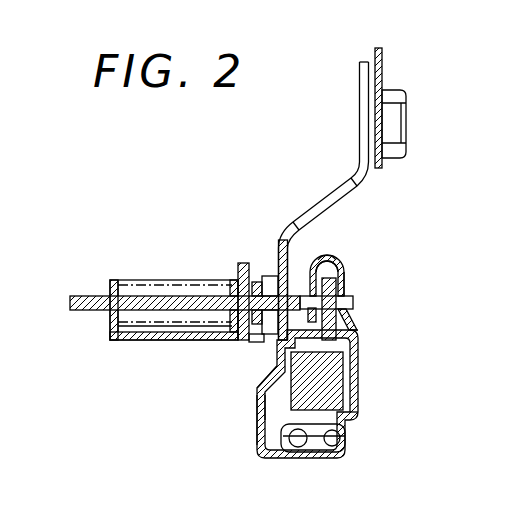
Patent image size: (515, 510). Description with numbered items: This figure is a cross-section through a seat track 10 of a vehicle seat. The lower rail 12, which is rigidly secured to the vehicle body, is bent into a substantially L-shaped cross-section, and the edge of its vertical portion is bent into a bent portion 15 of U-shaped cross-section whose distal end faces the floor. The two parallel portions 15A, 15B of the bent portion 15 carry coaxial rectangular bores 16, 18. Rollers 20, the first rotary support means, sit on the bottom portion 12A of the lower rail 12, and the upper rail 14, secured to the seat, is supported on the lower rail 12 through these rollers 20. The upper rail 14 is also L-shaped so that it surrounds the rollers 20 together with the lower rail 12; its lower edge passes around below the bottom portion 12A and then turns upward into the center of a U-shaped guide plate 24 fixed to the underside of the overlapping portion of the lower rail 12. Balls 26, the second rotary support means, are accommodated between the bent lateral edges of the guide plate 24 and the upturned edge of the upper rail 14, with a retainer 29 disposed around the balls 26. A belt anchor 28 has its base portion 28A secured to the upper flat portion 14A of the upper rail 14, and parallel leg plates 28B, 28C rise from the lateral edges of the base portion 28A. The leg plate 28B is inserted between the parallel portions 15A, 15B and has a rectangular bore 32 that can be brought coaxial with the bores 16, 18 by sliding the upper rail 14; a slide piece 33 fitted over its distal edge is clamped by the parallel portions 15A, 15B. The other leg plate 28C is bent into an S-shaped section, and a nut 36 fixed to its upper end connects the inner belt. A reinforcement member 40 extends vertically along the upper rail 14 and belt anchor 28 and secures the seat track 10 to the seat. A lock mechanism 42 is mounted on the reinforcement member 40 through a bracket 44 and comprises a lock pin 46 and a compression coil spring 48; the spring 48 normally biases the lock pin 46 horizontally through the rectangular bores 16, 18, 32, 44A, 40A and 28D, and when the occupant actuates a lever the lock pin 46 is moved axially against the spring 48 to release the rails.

The seat track 10 is at (455, 128).
The lower rail 12 is at (358, 386).
The bottom portion 12A is at (348, 414).
The upper rail 14 is at (259, 420).
The upper flat portion 14A is at (264, 365).
The bent portion 15 is at (346, 261).
The parallel portion 15A is at (317, 276).
The parallel portion 15B is at (346, 282).
The rectangular bore 16 is at (268, 282).
The rectangular bore 18 is at (345, 292).
The rollers 20 is at (343, 380).
The guide plate 24 is at (338, 454).
The balls 26 is at (298, 448).
The belt anchor 28 is at (272, 226).
The base portion 28A is at (357, 342).
The leg plate 28B is at (352, 324).
The leg plate 28C is at (300, 213).
The rectangular bore 28D is at (216, 342).
The retainer 29 is at (262, 408).
The rectangular bore 32 is at (353, 302).
The slide piece 33 is at (333, 257).
The nut 36 is at (407, 97).
The reinforcement member 40 is at (320, 203).
The rectangular bore 40A is at (241, 268).
The lock mechanism 42 is at (124, 358).
The bracket 44 is at (112, 335).
The rectangular bore 44A is at (256, 345).
The lock pin 46 is at (172, 280).
The compression coil spring 48 is at (114, 278).